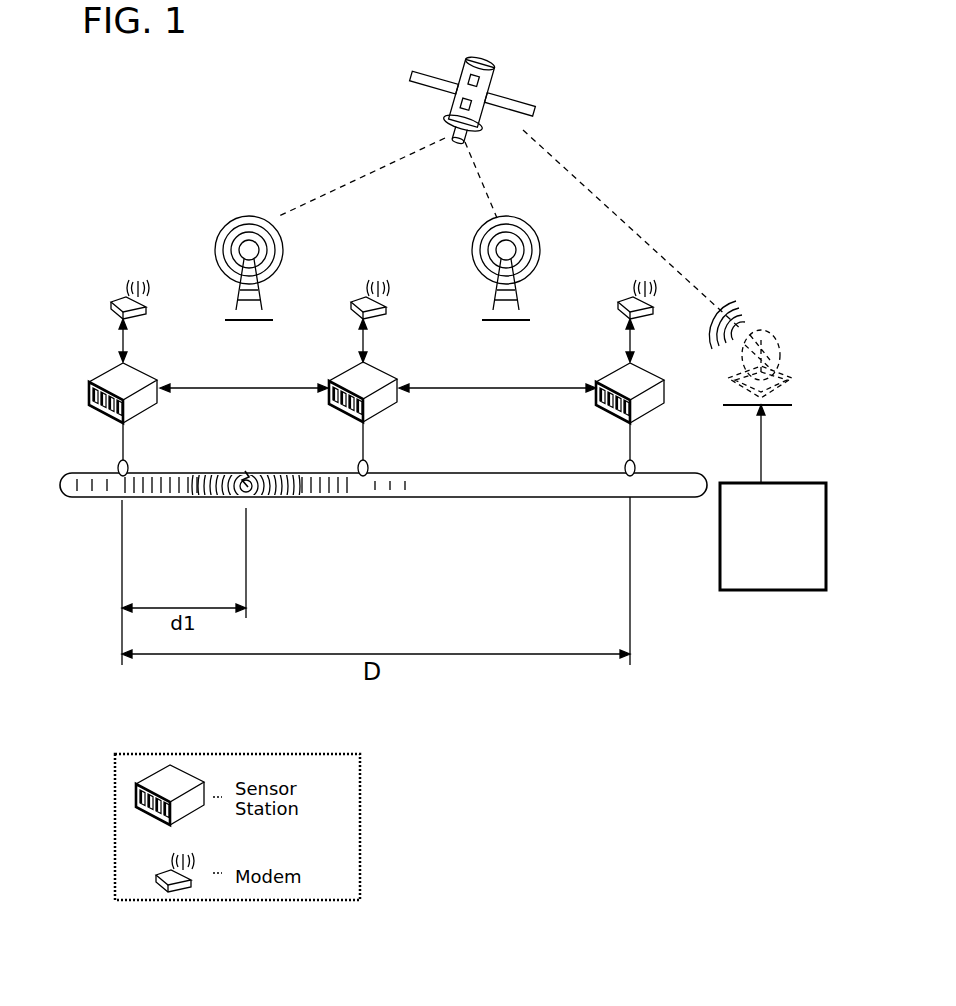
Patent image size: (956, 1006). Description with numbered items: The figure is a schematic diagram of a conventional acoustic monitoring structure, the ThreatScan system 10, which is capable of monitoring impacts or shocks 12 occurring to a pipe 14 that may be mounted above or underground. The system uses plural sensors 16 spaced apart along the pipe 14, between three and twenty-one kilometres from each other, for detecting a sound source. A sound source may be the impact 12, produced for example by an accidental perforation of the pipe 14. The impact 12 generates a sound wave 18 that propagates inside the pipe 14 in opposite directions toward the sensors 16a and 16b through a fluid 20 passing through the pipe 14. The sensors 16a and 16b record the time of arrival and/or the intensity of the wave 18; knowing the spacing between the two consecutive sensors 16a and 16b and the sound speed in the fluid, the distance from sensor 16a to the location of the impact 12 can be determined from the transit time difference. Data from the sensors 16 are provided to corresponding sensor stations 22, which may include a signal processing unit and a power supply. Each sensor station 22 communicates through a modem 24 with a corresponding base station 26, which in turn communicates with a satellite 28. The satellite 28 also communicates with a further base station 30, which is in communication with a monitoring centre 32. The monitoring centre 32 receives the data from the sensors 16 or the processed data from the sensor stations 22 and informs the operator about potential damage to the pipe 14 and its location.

The ThreatScan system 10 is at (291, 93).
The impact 12 is at (250, 475).
The pipe 14 is at (667, 490).
The sensors 16 is at (636, 466).
The sensor 16a is at (118, 462).
The sensor 16b is at (369, 464).
The sound wave 18 is at (190, 493).
The fluid 20 is at (508, 480).
The sensor station 22 is at (103, 373).
The modem 24 is at (150, 306).
The base station 26 is at (277, 263).
The satellite 28 is at (497, 80).
The base station 30 is at (740, 372).
The monitoring centre 32 is at (772, 592).